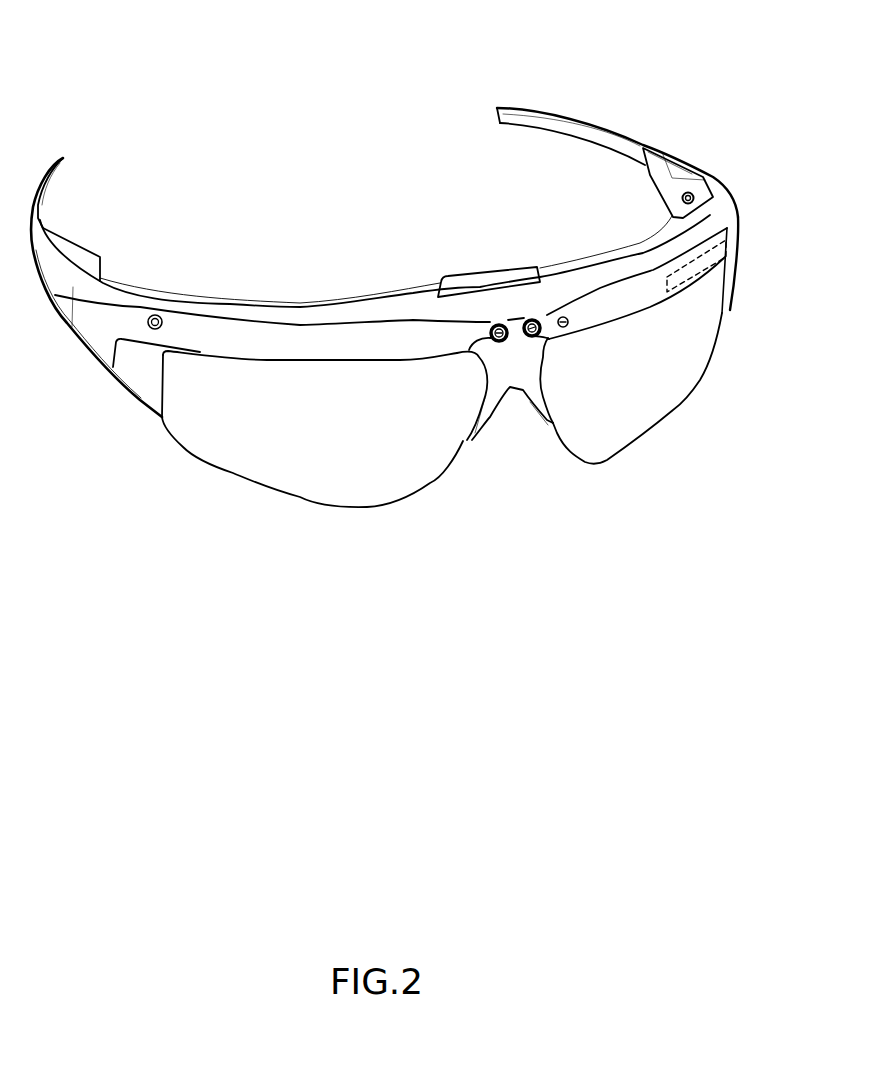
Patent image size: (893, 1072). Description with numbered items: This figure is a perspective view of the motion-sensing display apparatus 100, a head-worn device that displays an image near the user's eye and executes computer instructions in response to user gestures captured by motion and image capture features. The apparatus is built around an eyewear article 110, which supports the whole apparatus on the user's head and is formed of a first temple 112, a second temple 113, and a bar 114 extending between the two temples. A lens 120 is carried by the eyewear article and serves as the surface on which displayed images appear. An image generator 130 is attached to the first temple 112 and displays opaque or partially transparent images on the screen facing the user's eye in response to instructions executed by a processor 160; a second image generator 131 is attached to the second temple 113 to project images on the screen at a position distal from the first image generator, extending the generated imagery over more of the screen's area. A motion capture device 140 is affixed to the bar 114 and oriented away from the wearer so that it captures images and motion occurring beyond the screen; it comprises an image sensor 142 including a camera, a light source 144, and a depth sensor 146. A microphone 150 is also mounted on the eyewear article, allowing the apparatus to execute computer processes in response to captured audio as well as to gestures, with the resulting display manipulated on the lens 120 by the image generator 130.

The motion-sensing display apparatus 100 is at (243, 46).
The eyewear article 110 is at (54, 337).
The first temple 112 is at (538, 120).
The second temple 113 is at (47, 189).
The bar 114 is at (277, 333).
The lens 120 is at (210, 452).
The image generator 130 is at (670, 203).
The image generator 131 is at (73, 256).
The motion capture device 140 is at (511, 307).
The image sensor 142 is at (492, 337).
The light source 144 is at (570, 326).
The depth sensor 146 is at (519, 337).
The microphone 150 is at (155, 315).
The processor 160 is at (727, 258).